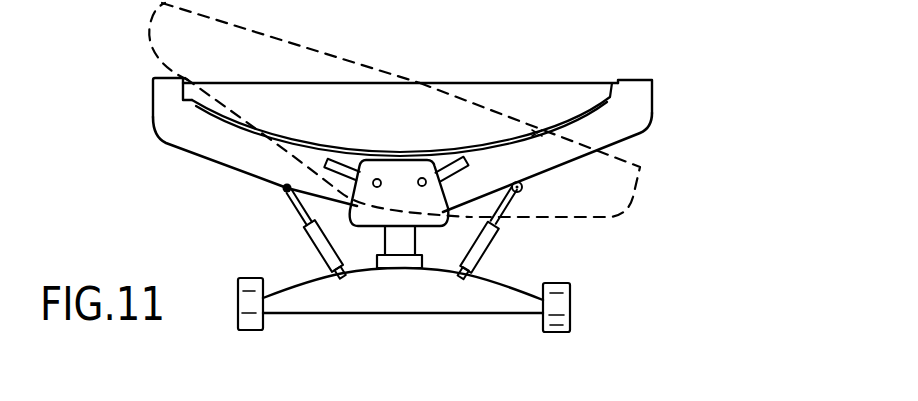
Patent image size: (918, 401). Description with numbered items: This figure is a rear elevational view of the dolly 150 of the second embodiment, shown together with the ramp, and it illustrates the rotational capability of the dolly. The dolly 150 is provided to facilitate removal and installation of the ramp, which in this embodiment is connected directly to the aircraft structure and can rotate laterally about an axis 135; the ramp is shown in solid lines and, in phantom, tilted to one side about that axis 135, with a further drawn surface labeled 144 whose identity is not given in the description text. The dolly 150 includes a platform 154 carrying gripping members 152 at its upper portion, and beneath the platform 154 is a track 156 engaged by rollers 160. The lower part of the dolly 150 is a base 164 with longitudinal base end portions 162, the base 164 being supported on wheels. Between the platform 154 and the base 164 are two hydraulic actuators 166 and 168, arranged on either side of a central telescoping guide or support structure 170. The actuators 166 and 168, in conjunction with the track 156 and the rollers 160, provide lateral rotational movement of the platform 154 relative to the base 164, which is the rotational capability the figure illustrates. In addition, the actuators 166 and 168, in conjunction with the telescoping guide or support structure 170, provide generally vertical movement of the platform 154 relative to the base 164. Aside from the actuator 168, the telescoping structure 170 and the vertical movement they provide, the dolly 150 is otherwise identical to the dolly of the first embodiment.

The axis 135 is at (393, 106).
The dish inner surface 144 is at (507, 83).
The dolly 150 is at (540, 343).
The gripping members 152 is at (652, 82).
The platform 154 is at (647, 133).
The track 156 is at (326, 167).
The rollers 160 is at (426, 182).
The longitudinal base end portions 162 is at (283, 188).
The base 164 is at (430, 313).
The hydraulic actuator 166 is at (317, 250).
The hydraulic actuator 168 is at (493, 232).
The telescoping guide or support structure 170 is at (403, 263).